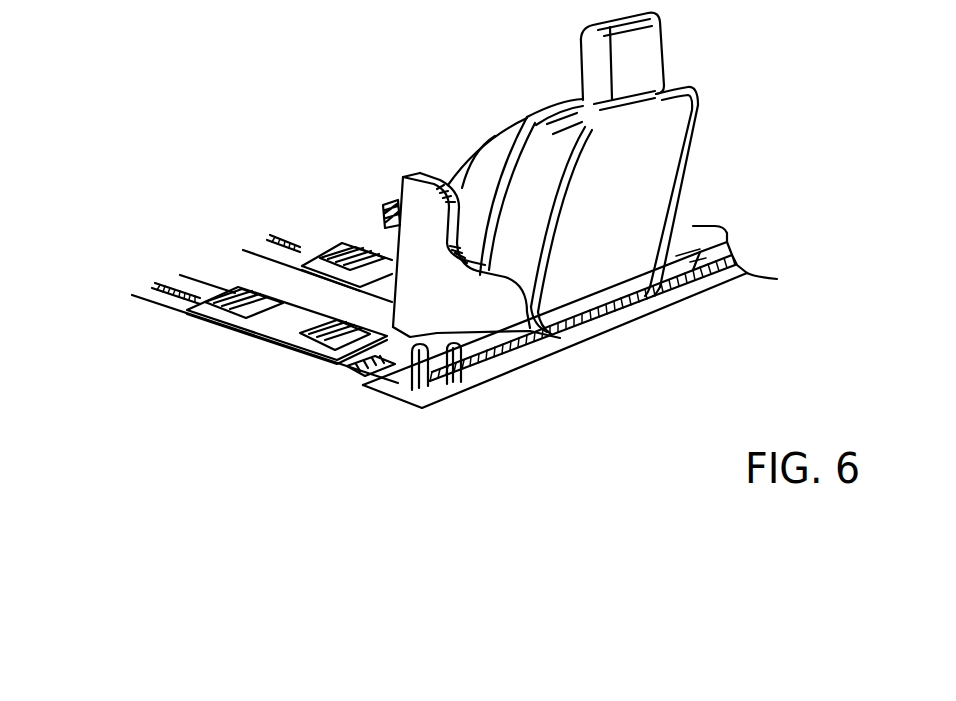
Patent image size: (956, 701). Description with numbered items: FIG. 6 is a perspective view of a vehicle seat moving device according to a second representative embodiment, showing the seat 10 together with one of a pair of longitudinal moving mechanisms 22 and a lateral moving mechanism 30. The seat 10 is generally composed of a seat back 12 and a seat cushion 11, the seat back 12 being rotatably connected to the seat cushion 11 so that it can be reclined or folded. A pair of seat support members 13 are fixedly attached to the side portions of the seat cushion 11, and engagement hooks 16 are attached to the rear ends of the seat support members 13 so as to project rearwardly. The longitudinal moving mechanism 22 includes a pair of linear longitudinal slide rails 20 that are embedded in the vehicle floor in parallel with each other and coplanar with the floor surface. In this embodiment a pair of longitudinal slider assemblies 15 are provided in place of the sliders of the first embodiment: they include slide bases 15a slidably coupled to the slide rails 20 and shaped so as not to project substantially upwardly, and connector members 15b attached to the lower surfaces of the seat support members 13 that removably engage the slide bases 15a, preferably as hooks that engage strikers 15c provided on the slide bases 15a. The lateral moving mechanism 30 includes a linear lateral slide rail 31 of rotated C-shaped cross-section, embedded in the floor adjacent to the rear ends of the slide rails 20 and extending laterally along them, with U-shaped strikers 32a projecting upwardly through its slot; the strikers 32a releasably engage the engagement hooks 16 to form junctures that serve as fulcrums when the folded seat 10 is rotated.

The seat 10 is at (515, 104).
The seat cushion 11 is at (475, 175).
The seat back 12 is at (677, 146).
The seat support members 13 is at (470, 310).
The longitudinal slider assemblies 15 is at (293, 245).
The slide bases 15a is at (280, 323).
The connector members 15b is at (385, 223).
The strikers 15c is at (240, 316).
The engagement hooks 16 is at (435, 383).
The longitudinal slide rails 20 is at (265, 293).
The longitudinal moving mechanism 22 is at (210, 334).
The lateral moving mechanism 30 is at (553, 341).
The lateral slide rail 31 is at (614, 322).
The strikers 32a is at (398, 374).